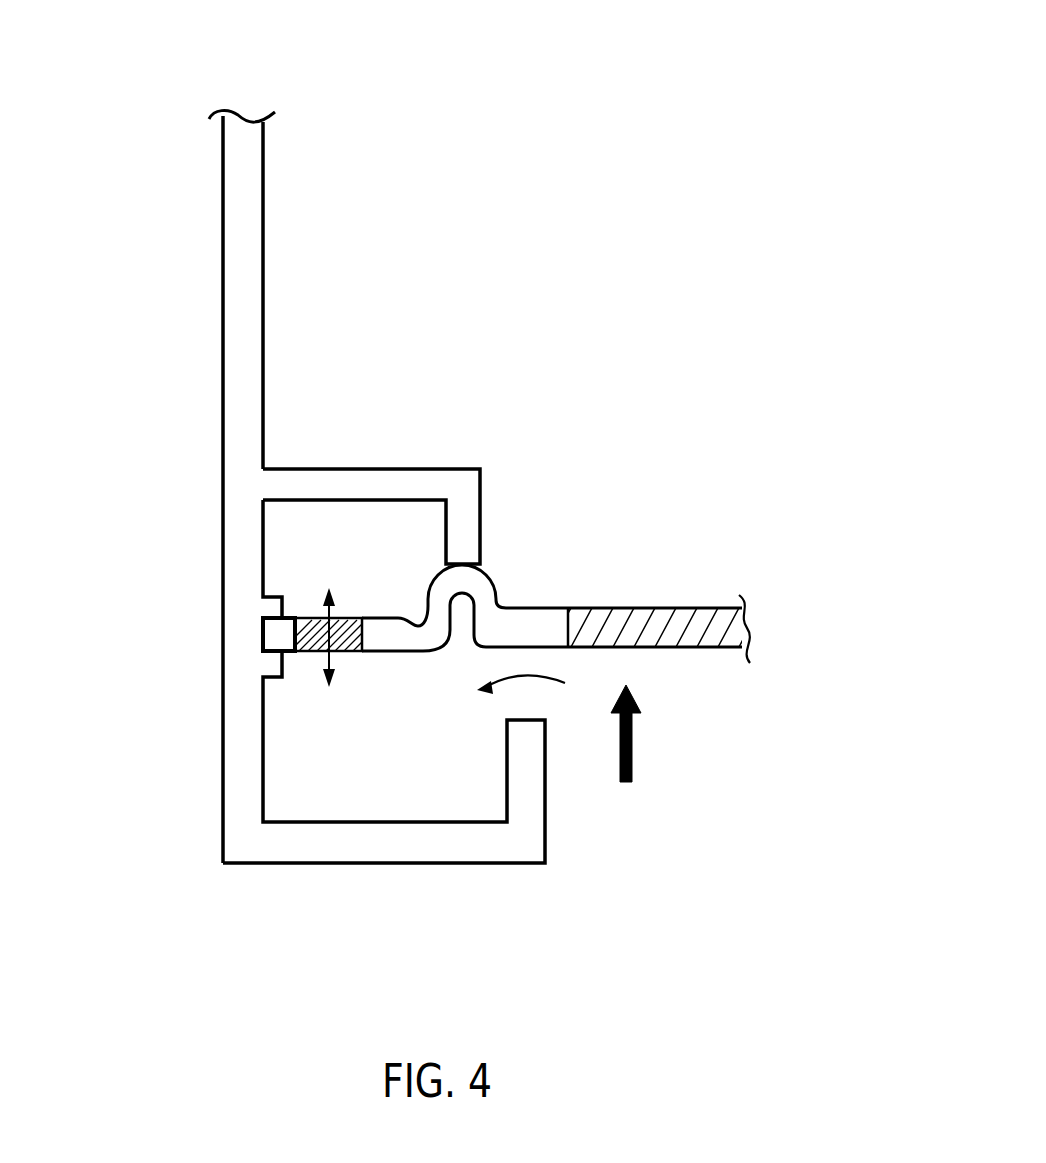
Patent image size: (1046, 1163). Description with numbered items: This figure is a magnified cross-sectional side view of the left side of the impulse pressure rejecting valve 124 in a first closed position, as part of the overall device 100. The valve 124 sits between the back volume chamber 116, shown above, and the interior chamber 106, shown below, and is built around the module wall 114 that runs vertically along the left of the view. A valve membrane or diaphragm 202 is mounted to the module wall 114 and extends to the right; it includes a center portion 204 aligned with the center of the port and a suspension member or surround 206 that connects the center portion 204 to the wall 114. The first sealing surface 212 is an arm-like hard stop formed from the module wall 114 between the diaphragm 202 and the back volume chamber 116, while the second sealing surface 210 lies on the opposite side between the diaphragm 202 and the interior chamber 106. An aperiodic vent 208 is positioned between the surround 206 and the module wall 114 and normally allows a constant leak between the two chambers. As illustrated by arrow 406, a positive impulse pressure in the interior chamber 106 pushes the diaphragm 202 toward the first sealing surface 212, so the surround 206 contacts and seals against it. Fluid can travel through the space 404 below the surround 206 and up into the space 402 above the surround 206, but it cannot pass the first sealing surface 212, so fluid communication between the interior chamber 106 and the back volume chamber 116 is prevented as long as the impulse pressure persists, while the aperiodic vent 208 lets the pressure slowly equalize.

The assembly 100 is at (661, 58).
The interior chamber 106 is at (614, 978).
The module wall 114 is at (223, 272).
The back volume chamber 116 is at (614, 226).
The valve 124 is at (166, 474).
The valve membrane or diaphragm 202 is at (658, 584).
The center portion 204 is at (680, 648).
The suspension member or surround 206 is at (483, 572).
The aperiodic vent 208 is at (308, 652).
The second sealing surface 210 is at (382, 863).
The first sealing surface 212 is at (376, 468).
The space above the surround 402 is at (341, 556).
The space below the surround 404 is at (376, 754).
The arrow 406 is at (632, 762).